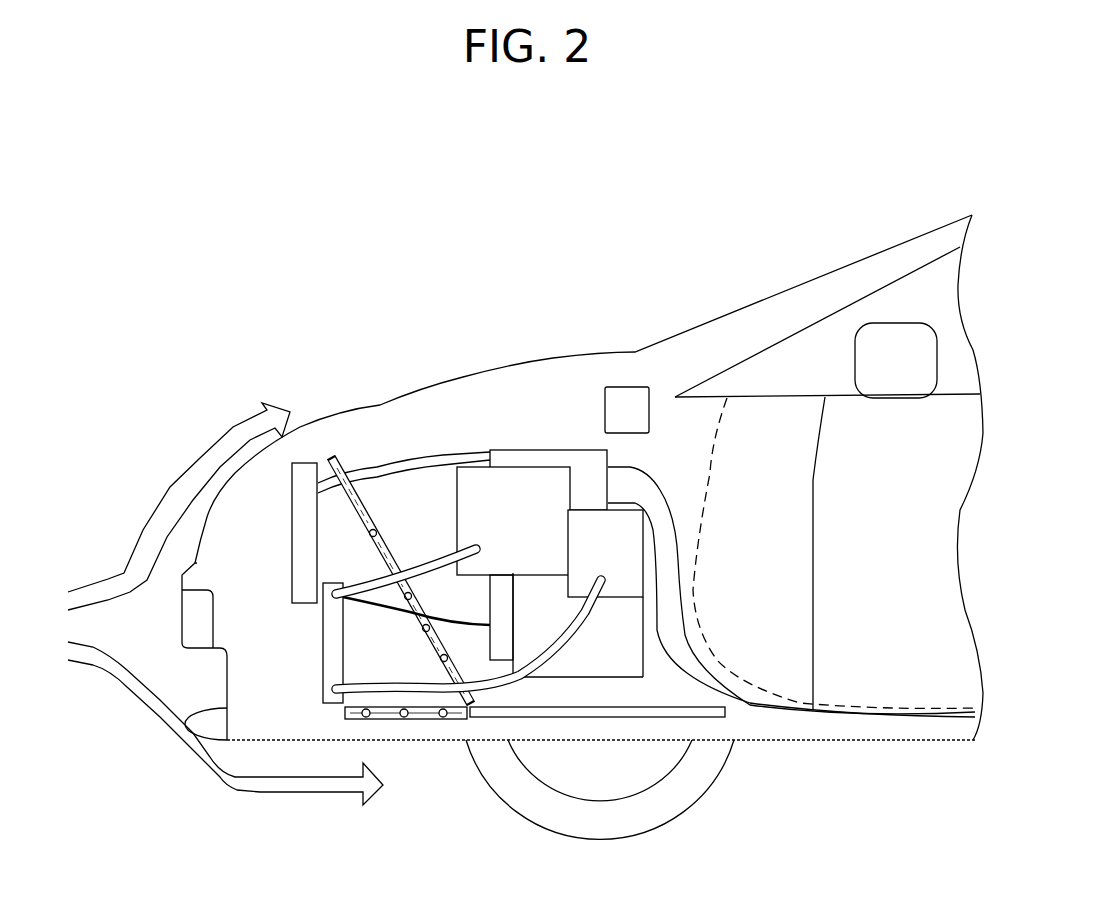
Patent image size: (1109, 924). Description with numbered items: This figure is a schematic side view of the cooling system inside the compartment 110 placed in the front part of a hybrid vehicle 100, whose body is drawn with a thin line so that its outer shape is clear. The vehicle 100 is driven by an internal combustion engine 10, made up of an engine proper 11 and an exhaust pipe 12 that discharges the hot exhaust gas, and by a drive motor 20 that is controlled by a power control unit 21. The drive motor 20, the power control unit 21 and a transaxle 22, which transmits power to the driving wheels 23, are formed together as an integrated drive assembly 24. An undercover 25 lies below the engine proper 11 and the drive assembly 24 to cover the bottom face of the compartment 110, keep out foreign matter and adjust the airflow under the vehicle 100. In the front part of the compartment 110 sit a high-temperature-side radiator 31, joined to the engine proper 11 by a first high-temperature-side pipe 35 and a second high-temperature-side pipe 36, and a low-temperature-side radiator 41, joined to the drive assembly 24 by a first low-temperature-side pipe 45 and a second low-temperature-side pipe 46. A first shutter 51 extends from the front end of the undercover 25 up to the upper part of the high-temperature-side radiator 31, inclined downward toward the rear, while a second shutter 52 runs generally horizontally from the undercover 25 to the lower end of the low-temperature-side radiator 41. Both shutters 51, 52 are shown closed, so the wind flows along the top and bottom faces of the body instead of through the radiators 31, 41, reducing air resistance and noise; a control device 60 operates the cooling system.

The vehicle 100 is at (810, 254).
The compartment 110 is at (676, 449).
The internal combustion engine 10 is at (588, 436).
The engine proper 11 is at (557, 460).
The exhaust pipe 12 is at (630, 483).
The drive motor 20 is at (622, 550).
The power control unit 21 is at (500, 447).
The transaxle 22 is at (570, 667).
The driving wheels 23 is at (684, 815).
The drive assembly 24 is at (648, 573).
The undercover 25 is at (707, 720).
The high-temperature-side radiator 31 is at (305, 558).
The first high-temperature-side pipe 35 is at (377, 610).
The second high-temperature-side pipe 36 is at (368, 465).
The low-temperature-side radiator 41 is at (329, 617).
The first low-temperature-side pipe 45 is at (350, 687).
The second low-temperature-side pipe 46 is at (417, 563).
The first shutter 51 is at (322, 455).
The second shutter 52 is at (424, 722).
The control device 60 is at (625, 397).